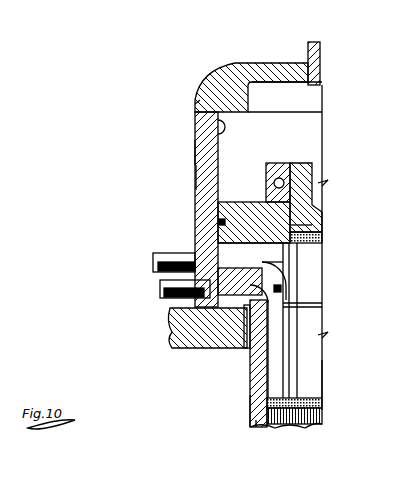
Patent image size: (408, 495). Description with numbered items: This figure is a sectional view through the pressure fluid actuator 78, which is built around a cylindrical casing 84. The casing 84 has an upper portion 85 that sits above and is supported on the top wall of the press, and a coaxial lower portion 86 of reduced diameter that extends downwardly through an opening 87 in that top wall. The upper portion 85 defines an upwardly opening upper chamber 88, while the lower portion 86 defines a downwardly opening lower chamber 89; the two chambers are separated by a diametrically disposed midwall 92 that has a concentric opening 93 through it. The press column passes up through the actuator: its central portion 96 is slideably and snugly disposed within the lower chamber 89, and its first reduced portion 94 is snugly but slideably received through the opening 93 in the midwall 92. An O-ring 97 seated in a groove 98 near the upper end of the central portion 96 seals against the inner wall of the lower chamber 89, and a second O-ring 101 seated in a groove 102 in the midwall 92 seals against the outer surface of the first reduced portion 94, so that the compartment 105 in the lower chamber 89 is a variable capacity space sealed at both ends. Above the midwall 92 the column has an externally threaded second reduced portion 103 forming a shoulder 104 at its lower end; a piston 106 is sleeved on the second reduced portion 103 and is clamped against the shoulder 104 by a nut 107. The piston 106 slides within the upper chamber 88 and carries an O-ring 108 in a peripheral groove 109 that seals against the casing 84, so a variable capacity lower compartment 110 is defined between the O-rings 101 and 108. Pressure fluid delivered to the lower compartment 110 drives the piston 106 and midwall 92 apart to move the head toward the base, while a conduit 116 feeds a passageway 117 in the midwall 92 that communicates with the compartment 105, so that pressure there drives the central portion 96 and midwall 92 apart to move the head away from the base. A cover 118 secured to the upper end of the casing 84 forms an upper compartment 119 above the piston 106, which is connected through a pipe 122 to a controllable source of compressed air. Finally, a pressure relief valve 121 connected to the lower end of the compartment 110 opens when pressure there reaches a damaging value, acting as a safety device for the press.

The pressure fluid actuator 78 is at (188, 135).
The cylindrical casing 84 is at (195, 152).
The upper portion 85 is at (210, 168).
The lower portion 86 is at (255, 405).
The opening 87 is at (246, 346).
The upper chamber 88 is at (195, 106).
The lower chamber 89 is at (262, 425).
The midwall 92 is at (290, 303).
The opening 93 is at (300, 307).
The first reduced portion 94 is at (322, 380).
The central portion 96 is at (298, 425).
The O-ring 97 is at (290, 385).
The groove 98 is at (322, 410).
The O-ring 101 is at (281, 286).
The groove 102 is at (283, 263).
The second reduced portion 103 is at (305, 170).
The shoulder 104 is at (310, 240).
The compartment 105 is at (262, 375).
The piston 106 is at (300, 232).
The nut 107 is at (288, 165).
The O-ring 108 is at (219, 222).
The peripheral groove 109 is at (248, 205).
The lower compartment 110 is at (220, 244).
The conduit 116 is at (165, 290).
The passageway 117 is at (228, 268).
The cover 118 is at (290, 62).
The upper compartment 119 is at (318, 112).
The pressure relief valve 121 is at (153, 262).
The pipe 122 is at (318, 42).